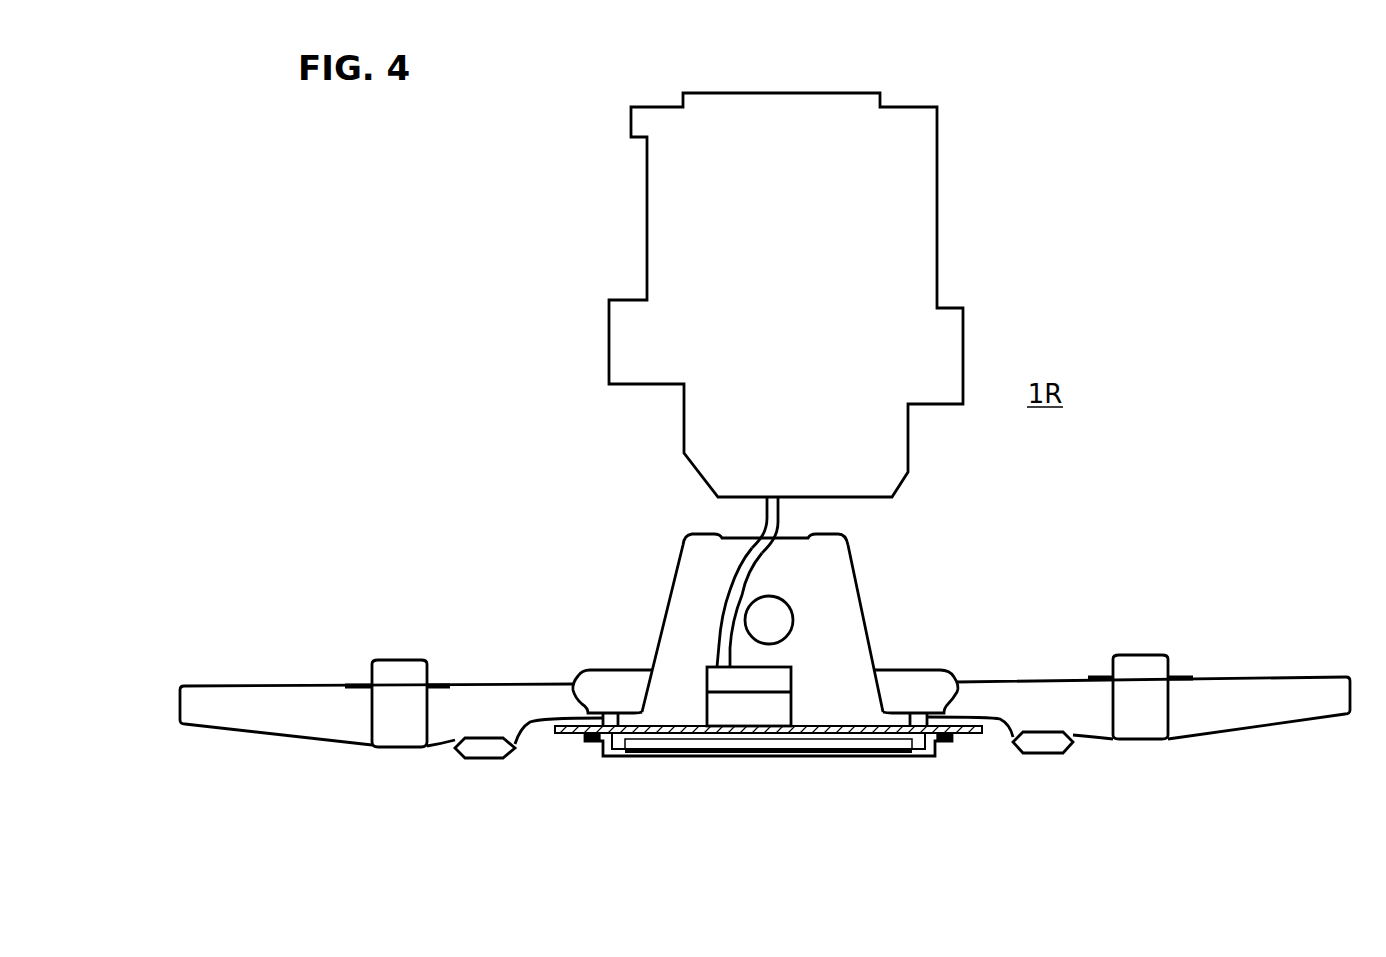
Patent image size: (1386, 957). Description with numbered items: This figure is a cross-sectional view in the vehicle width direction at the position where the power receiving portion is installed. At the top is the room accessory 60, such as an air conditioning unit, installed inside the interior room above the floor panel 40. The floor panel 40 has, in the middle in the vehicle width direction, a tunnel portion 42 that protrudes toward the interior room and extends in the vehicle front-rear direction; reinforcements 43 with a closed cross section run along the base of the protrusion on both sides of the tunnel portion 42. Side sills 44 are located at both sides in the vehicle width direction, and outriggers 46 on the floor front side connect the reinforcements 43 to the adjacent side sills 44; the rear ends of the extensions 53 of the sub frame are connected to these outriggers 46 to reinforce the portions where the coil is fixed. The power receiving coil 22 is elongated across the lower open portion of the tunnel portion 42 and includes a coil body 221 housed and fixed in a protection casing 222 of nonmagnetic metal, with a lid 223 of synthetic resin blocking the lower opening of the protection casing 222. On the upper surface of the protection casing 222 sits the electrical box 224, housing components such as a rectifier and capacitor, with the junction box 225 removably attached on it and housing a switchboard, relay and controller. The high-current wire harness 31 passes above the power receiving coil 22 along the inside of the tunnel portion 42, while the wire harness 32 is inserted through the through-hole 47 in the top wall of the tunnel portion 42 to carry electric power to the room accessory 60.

The room accessory 60 is at (640, 257).
The through-hole 47 is at (778, 535).
The wire harness 32 is at (733, 580).
The tunnel portion 42 is at (848, 552).
The wire harness 31 is at (794, 608).
The floor panel 40 is at (997, 680).
The reinforcements 43 is at (607, 663).
The side sills 44 is at (267, 737).
The extensions 53 is at (480, 758).
The outriggers 46 is at (541, 723).
The power receiving coil 22 is at (733, 757).
The coil body 221 is at (782, 758).
The protection casing 222 is at (872, 723).
The lid 223 is at (645, 758).
The electrical box 224 is at (783, 703).
The junction box 225 is at (718, 675).